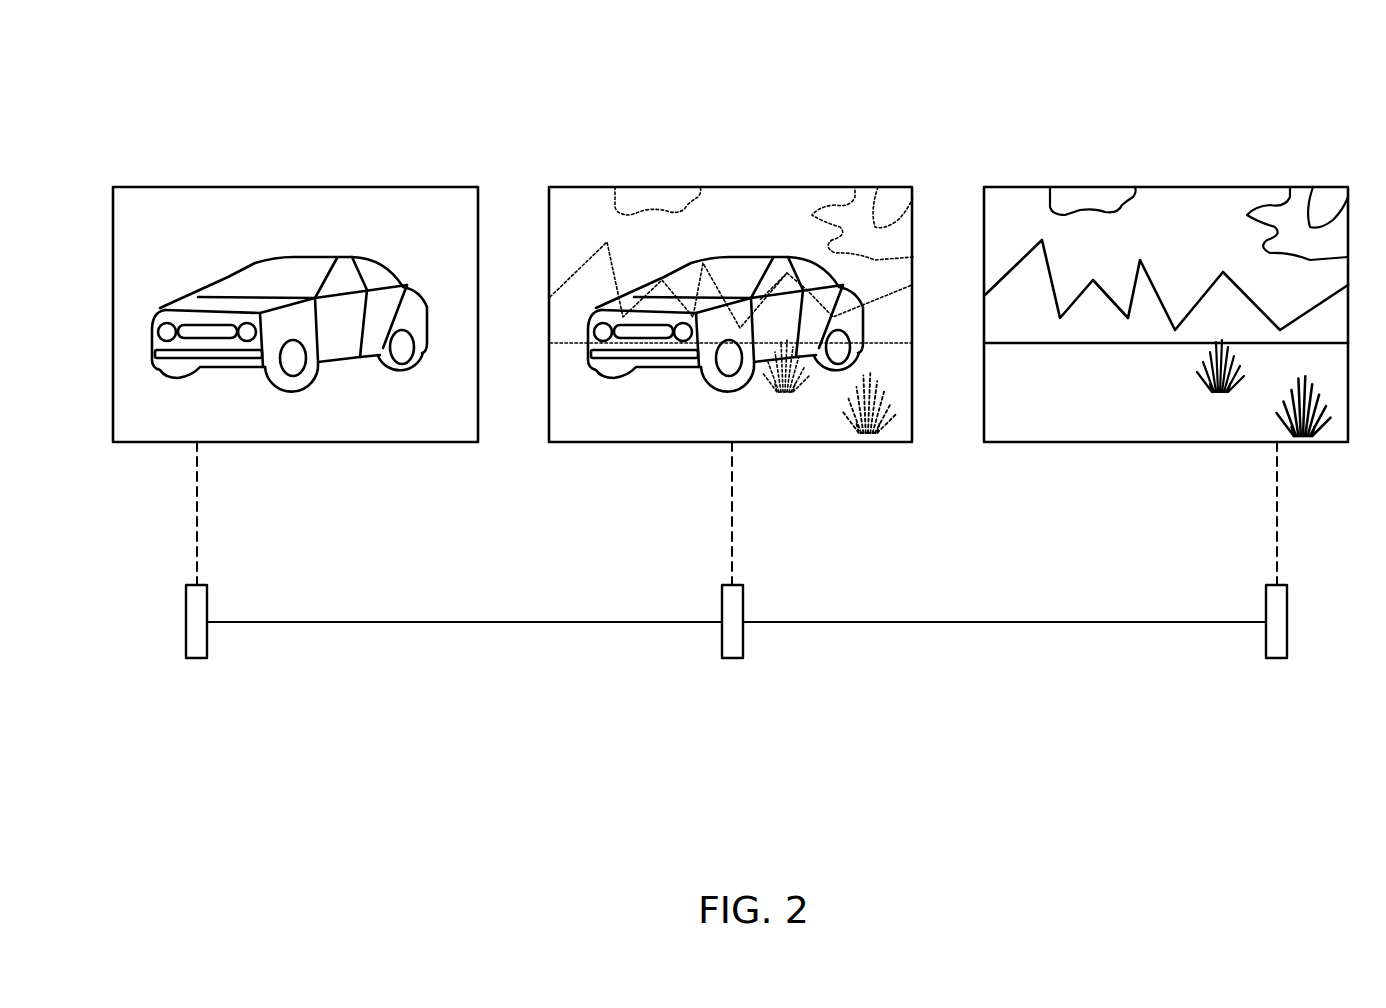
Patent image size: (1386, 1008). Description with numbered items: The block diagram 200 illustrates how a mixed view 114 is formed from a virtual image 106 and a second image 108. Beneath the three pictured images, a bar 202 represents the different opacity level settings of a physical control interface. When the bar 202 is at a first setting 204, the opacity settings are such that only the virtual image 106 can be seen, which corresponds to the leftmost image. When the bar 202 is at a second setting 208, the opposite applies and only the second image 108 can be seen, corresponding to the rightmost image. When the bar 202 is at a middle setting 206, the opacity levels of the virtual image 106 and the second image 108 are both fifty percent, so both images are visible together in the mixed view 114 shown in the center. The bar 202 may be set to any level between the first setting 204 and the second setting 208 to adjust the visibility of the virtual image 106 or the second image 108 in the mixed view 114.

The timing diagram 200 is at (112, 32).
The virtual image 106 is at (295, 187).
The mixed view 114 is at (750, 187).
The second image 108 is at (1185, 187).
The bar 202 is at (1293, 622).
The first setting 204 is at (197, 658).
The middle setting 206 is at (732, 658).
The second setting 208 is at (1277, 658).